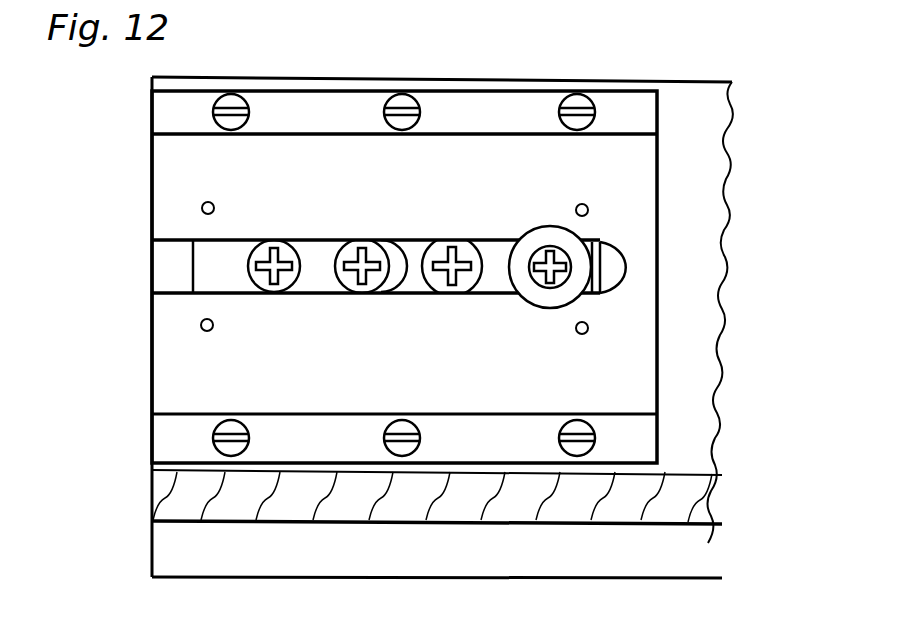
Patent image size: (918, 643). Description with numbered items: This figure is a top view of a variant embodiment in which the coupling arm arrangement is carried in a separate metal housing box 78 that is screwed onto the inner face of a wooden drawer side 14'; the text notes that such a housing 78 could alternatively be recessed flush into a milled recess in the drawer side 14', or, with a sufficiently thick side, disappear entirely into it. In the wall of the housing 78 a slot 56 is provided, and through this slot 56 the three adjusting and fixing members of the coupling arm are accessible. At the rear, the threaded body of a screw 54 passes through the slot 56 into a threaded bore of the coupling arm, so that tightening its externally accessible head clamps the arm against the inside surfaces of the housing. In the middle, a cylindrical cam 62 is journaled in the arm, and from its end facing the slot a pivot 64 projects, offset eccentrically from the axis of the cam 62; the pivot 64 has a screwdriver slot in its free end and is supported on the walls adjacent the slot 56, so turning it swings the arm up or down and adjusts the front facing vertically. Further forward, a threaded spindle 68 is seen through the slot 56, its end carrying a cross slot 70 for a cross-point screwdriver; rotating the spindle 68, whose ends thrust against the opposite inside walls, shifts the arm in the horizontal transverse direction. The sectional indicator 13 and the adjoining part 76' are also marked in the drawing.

The section line / viewing direction arrow 13 is at (100, 270).
The wooden drawer side 14' is at (486, 327).
The screw 54 is at (553, 306).
The slot 56 is at (310, 260).
The cylindrical cam 62 is at (392, 265).
The pivot 64 is at (352, 280).
The threaded spindle 68 is at (465, 250).
The cross slot 70 is at (450, 295).
The drawer bottom panel 76' is at (437, 556).
The housing box 78 is at (173, 339).